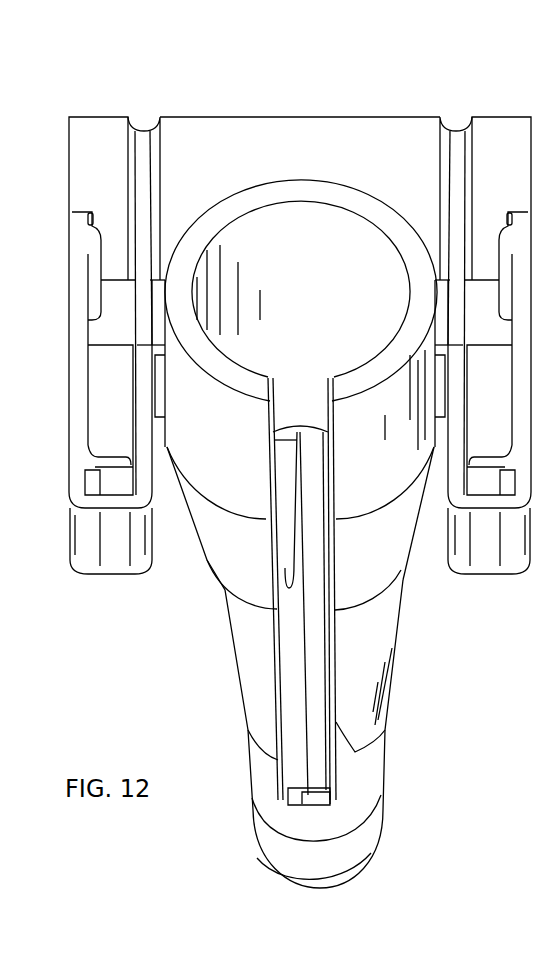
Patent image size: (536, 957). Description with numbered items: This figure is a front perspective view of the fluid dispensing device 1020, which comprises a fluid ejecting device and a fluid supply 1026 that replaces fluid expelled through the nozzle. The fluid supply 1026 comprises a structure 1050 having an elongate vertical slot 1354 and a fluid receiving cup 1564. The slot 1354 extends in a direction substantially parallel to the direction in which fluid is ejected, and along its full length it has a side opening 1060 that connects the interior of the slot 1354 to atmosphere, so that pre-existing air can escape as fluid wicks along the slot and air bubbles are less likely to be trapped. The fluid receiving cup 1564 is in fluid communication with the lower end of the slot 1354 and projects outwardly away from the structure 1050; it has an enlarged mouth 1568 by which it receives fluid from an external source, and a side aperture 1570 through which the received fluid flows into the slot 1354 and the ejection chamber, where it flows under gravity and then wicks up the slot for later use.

The fluid dispensing device 1020 is at (256, 92).
The fluid supply 1026 is at (64, 116).
The structure 1050 is at (396, 648).
The side opening 1060 is at (278, 642).
The slot 1354 is at (298, 692).
The fluid receiving cup 1564 is at (360, 835).
The mouth 1568 is at (302, 812).
The side aperture 1570 is at (330, 800).